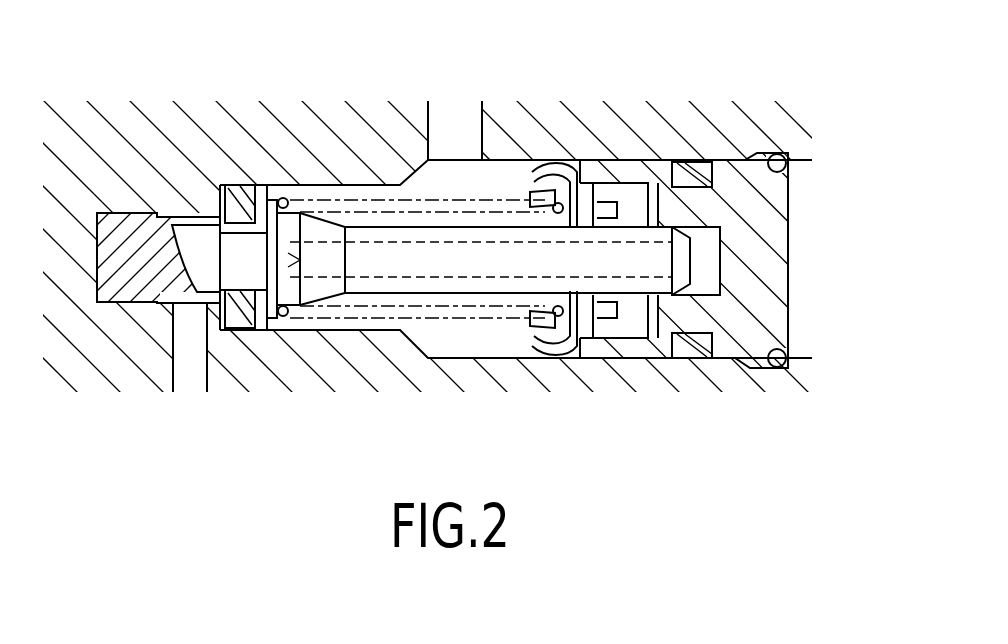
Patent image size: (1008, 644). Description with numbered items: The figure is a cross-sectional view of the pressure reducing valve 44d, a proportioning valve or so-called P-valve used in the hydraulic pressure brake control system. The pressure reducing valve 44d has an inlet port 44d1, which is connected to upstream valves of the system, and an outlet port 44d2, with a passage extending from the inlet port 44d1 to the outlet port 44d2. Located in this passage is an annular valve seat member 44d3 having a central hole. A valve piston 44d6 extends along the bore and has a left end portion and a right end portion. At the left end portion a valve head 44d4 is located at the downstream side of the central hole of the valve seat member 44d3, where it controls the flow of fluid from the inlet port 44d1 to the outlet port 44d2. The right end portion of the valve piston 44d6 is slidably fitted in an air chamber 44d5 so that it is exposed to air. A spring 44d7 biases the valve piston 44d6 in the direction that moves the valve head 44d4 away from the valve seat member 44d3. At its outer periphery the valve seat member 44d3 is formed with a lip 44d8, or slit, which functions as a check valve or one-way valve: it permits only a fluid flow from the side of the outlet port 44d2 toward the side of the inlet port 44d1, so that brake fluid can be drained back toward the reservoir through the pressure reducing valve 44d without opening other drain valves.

The pressure reducing valve 44d is at (650, 62).
The inlet port 44d1 is at (457, 128).
The outlet port 44d2 is at (190, 360).
The annular valve seat member 44d3 is at (248, 192).
The valve head 44d4 is at (203, 227).
The air chamber 44d5 is at (708, 273).
The valve piston 44d6 is at (505, 262).
The spring 44d7 is at (285, 202).
The lip 44d8 is at (245, 317).